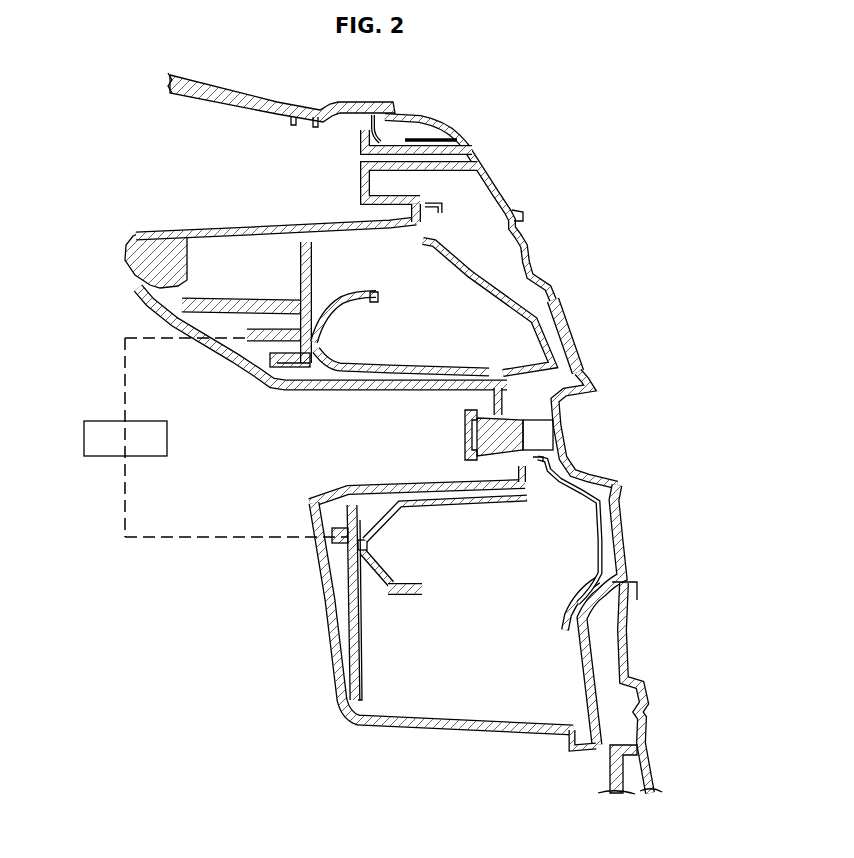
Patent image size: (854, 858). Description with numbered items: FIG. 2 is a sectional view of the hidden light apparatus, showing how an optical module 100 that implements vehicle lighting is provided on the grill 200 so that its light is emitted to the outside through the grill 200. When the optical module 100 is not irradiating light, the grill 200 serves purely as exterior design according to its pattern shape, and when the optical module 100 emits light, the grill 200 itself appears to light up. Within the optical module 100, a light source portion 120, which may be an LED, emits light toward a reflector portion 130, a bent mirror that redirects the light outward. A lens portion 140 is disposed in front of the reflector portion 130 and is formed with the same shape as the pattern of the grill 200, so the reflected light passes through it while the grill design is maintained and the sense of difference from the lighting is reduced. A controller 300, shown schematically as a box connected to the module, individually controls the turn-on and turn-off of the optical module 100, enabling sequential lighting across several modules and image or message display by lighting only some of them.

The optical module 100 is at (129, 290).
The light source portion 120 is at (290, 364).
The reflector portion 130 is at (407, 500).
The lens portion 140 is at (572, 333).
The grill 200 is at (531, 223).
The controller 300 is at (102, 453).